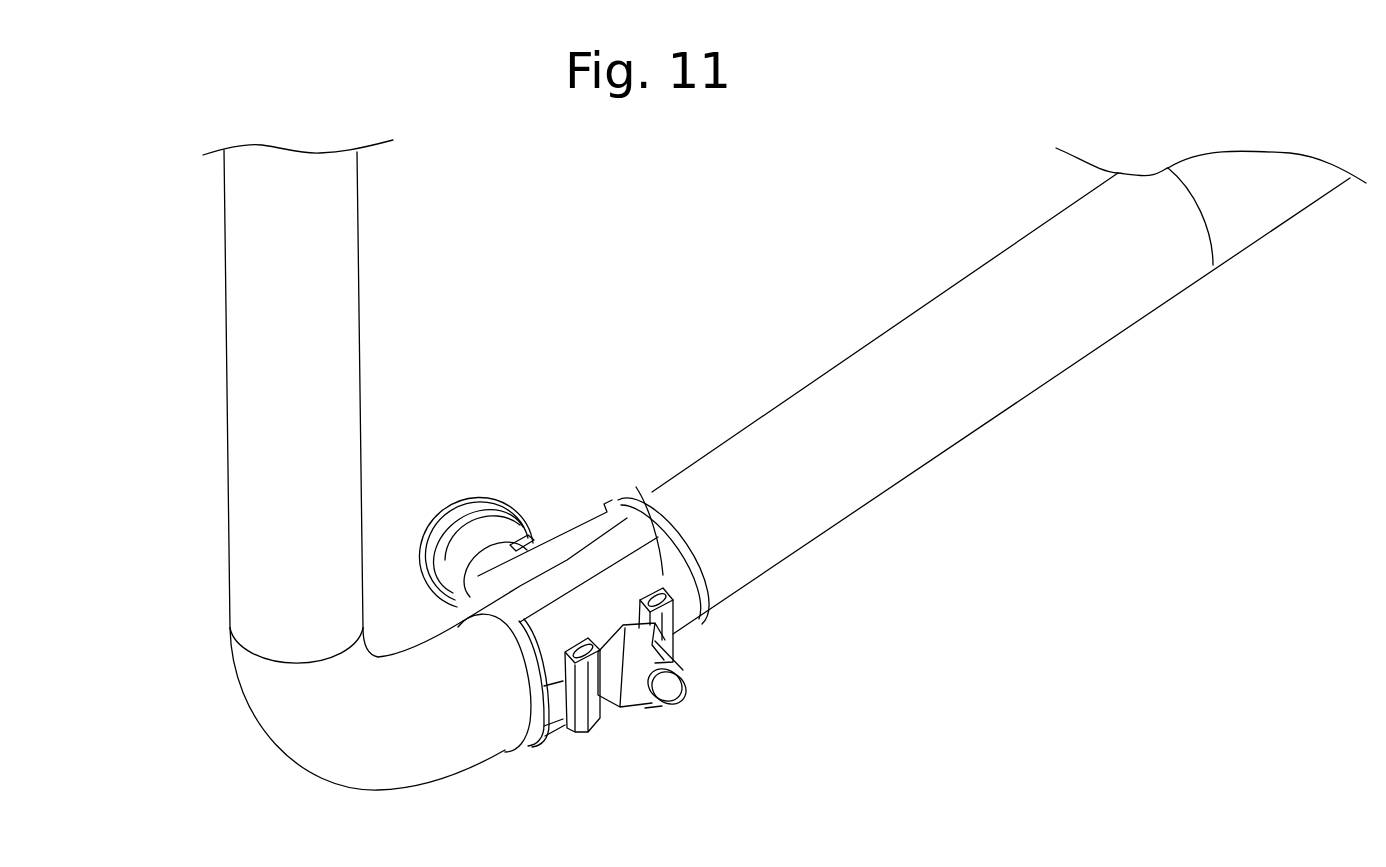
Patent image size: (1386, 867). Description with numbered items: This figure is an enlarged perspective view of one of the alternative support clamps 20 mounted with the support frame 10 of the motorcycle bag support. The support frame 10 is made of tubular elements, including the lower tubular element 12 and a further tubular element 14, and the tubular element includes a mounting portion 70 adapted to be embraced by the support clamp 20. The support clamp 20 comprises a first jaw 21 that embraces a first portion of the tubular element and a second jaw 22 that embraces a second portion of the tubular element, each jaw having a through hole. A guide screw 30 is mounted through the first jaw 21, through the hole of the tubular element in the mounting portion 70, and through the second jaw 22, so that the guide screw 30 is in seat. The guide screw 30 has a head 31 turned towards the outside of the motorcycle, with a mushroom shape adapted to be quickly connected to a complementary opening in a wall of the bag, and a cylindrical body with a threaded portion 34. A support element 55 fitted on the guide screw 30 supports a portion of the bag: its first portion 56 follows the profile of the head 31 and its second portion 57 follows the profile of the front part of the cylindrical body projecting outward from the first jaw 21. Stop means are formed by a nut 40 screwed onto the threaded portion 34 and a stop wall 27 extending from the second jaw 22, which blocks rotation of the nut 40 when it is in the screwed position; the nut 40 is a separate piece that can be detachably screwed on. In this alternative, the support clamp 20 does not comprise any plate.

The support frame 10 is at (906, 340).
The lower tubular element 12 is at (970, 310).
The tubular element 14 is at (262, 392).
The support clamp 20 is at (582, 566).
The first jaw 21 is at (589, 527).
The second jaw 22 is at (647, 580).
The stop wall 27 is at (682, 647).
The guide screw 30 is at (478, 548).
The head 31 is at (447, 542).
The threaded portion 34 is at (668, 697).
The nut 40 is at (617, 652).
The support element 55 is at (489, 490).
The first portion 56 is at (505, 512).
The second portion 57 is at (518, 553).
The mounting portion 70 is at (520, 610).